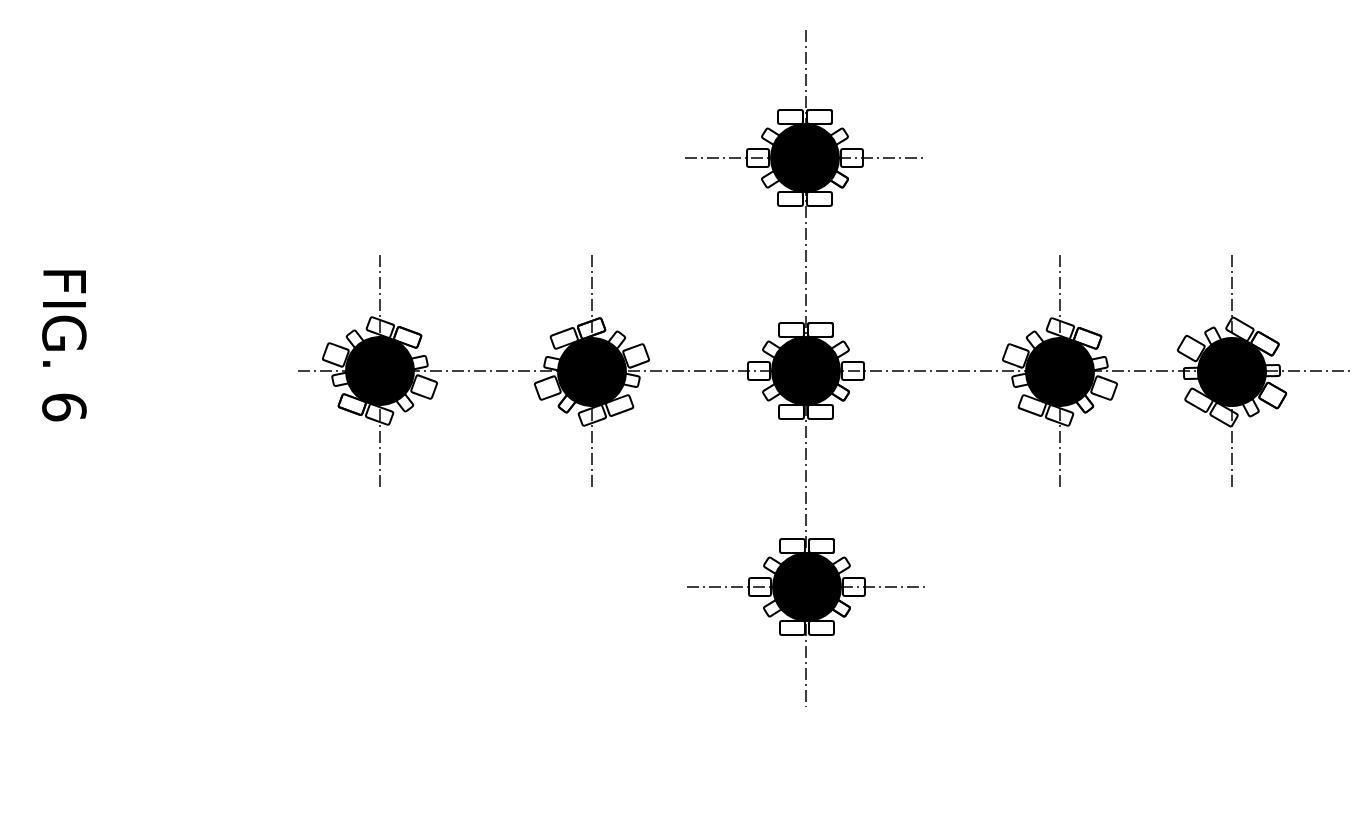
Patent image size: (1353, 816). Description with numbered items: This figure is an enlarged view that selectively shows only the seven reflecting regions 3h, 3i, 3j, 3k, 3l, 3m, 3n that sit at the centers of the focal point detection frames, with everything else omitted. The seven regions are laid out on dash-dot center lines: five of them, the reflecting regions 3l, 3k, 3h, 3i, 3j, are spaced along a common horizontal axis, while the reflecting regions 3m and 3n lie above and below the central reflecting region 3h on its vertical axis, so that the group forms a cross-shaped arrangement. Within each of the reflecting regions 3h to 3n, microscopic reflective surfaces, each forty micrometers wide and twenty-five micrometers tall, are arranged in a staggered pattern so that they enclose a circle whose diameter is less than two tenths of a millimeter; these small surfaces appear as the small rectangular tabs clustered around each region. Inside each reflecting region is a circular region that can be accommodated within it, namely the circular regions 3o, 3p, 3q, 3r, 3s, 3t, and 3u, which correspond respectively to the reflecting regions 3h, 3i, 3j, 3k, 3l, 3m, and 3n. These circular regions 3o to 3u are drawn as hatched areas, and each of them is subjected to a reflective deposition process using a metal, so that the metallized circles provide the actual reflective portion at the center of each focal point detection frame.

The reflecting region 3h is at (836, 328).
The reflecting region 3i is at (1098, 337).
The reflecting region 3j is at (1272, 340).
The reflecting region 3k is at (607, 320).
The reflecting region 3l is at (405, 325).
The reflecting region 3m is at (836, 118).
The reflecting region 3n is at (835, 547).
The circular region 3o is at (842, 398).
The circular region 3p is at (1090, 403).
The circular region 3q is at (1270, 393).
The circular region 3r is at (565, 403).
The circular region 3s is at (357, 403).
The circular region 3t is at (840, 183).
The circular region 3u is at (840, 610).